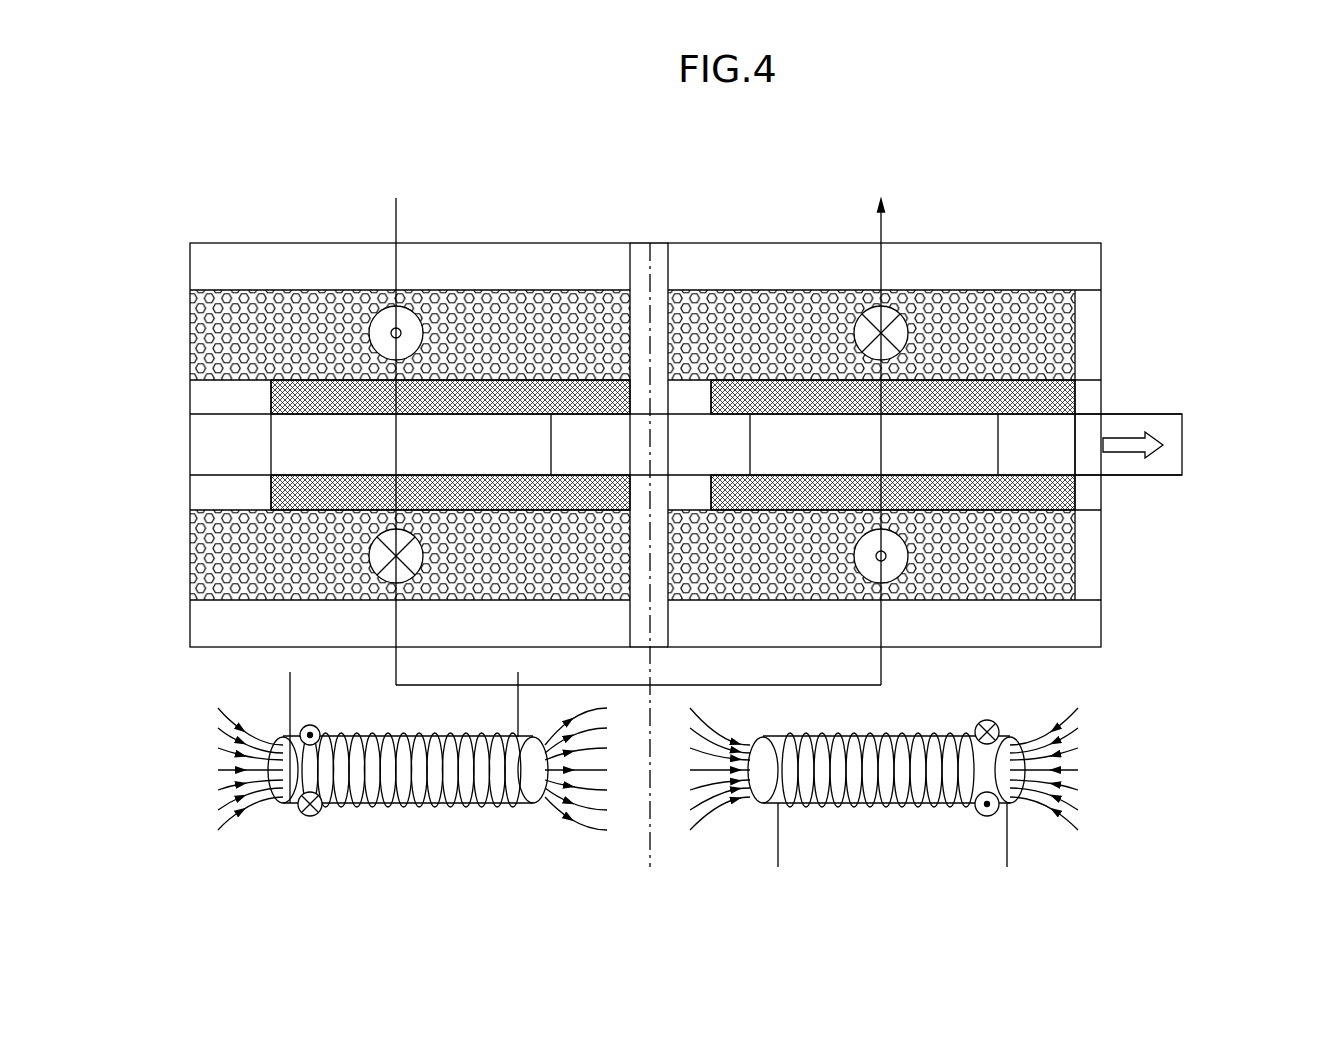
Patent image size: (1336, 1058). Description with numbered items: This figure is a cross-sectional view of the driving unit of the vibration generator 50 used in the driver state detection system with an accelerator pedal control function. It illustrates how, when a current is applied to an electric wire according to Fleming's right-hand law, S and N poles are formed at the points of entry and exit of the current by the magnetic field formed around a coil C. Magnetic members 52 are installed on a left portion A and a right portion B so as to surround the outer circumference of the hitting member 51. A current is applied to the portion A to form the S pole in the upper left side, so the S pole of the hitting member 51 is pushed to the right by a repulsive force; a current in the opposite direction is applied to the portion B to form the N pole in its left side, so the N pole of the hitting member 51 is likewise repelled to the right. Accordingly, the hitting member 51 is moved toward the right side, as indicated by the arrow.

The vibration generator 50 is at (1126, 213).
The hitting member 51 is at (1168, 425).
The magnetic member 52 is at (1050, 378).
The coil C is at (1053, 292).
The portion A is at (190, 200).
The portion B is at (662, 200).